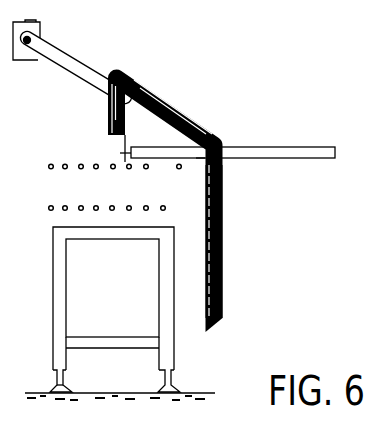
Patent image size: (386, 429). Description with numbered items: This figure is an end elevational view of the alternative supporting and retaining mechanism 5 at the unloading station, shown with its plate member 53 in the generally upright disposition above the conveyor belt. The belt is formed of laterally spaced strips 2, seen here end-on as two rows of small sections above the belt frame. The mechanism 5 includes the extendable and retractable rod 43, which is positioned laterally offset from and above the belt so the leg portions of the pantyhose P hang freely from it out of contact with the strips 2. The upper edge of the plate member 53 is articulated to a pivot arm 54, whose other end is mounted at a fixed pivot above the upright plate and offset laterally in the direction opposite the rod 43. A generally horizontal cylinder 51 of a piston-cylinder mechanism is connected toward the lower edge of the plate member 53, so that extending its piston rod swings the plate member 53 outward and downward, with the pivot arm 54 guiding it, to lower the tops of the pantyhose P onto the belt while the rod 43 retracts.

The strips 2 is at (95, 169).
The mechanism 5 is at (195, 103).
The rod 43 is at (199, 167).
The cylinder 51 is at (293, 148).
The plate member 53 is at (127, 138).
The pivot arm 54 is at (78, 60).
The pantyhose P is at (223, 240).